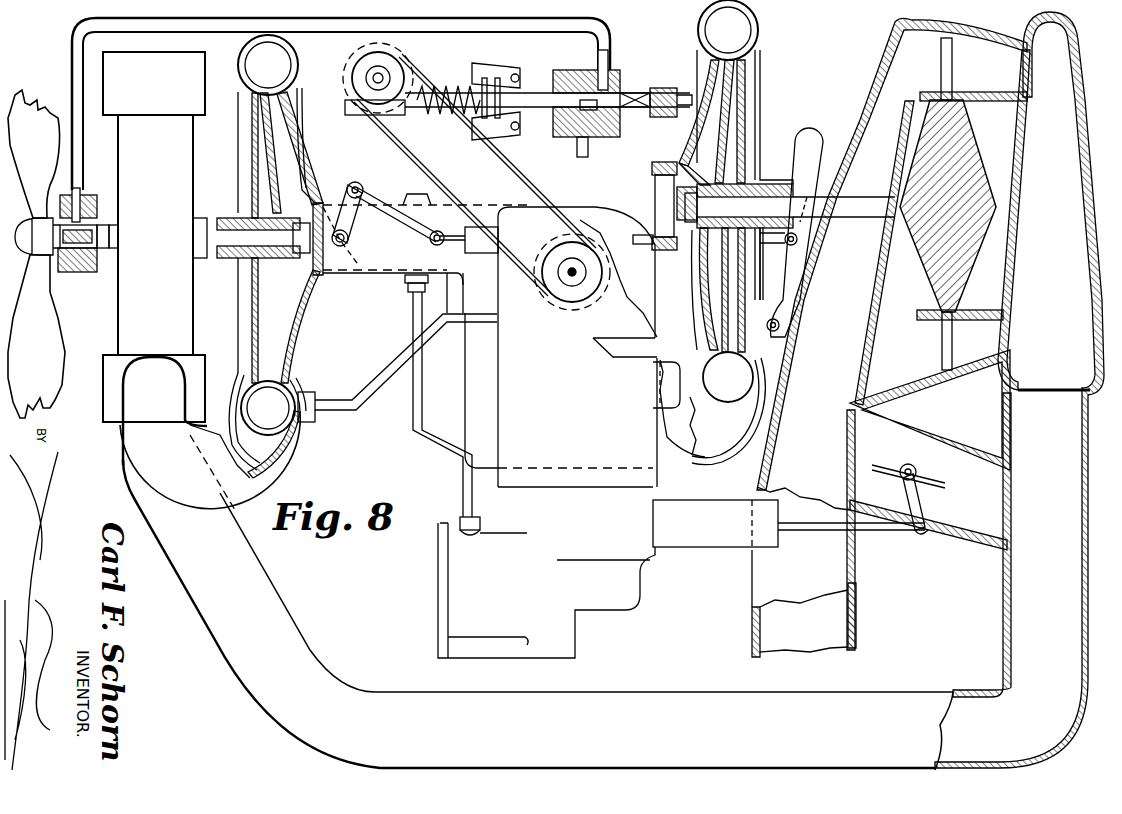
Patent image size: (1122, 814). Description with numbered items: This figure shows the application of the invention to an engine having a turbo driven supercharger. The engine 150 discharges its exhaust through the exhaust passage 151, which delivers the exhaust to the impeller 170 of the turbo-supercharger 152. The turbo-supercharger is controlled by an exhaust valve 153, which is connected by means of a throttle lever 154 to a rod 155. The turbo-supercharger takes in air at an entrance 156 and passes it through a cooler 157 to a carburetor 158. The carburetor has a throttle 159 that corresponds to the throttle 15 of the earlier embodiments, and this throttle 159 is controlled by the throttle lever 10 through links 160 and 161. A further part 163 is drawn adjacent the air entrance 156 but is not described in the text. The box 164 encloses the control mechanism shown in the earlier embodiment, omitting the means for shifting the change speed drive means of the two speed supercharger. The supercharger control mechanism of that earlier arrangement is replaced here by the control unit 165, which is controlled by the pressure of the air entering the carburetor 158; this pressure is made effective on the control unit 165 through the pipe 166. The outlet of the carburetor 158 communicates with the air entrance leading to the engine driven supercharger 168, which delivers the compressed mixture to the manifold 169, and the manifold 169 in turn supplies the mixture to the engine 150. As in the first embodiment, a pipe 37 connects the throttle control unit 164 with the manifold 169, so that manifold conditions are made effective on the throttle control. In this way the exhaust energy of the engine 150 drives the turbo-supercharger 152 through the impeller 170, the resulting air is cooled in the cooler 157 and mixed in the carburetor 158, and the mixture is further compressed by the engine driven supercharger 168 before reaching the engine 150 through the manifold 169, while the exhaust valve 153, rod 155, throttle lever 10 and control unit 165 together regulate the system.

The throttle lever 10 is at (800, 165).
The throttle 15 is at (728, 377).
The pipe 37 is at (400, 352).
The engine 150 is at (155, 237).
The exhaust passage 151 is at (588, 391).
The turbo-supercharger 152 is at (822, 116).
The exhaust valve 153 is at (900, 466).
The throttle lever 154 is at (920, 502).
The rod 155 is at (902, 531).
The entrance 156 is at (652, 185).
The cooler 157 is at (478, 381).
The carburetor 158 is at (365, 217).
The throttle 159 is at (336, 230).
The link 160 is at (361, 188).
The link 161 is at (457, 242).
The pin 163 is at (640, 236).
The box 164 is at (589, 347).
The control unit 165 is at (546, 590).
The pipe 166 is at (413, 306).
The engine driven supercharger 168 is at (290, 320).
The manifold 169 is at (297, 393).
The impeller 170 is at (967, 147).